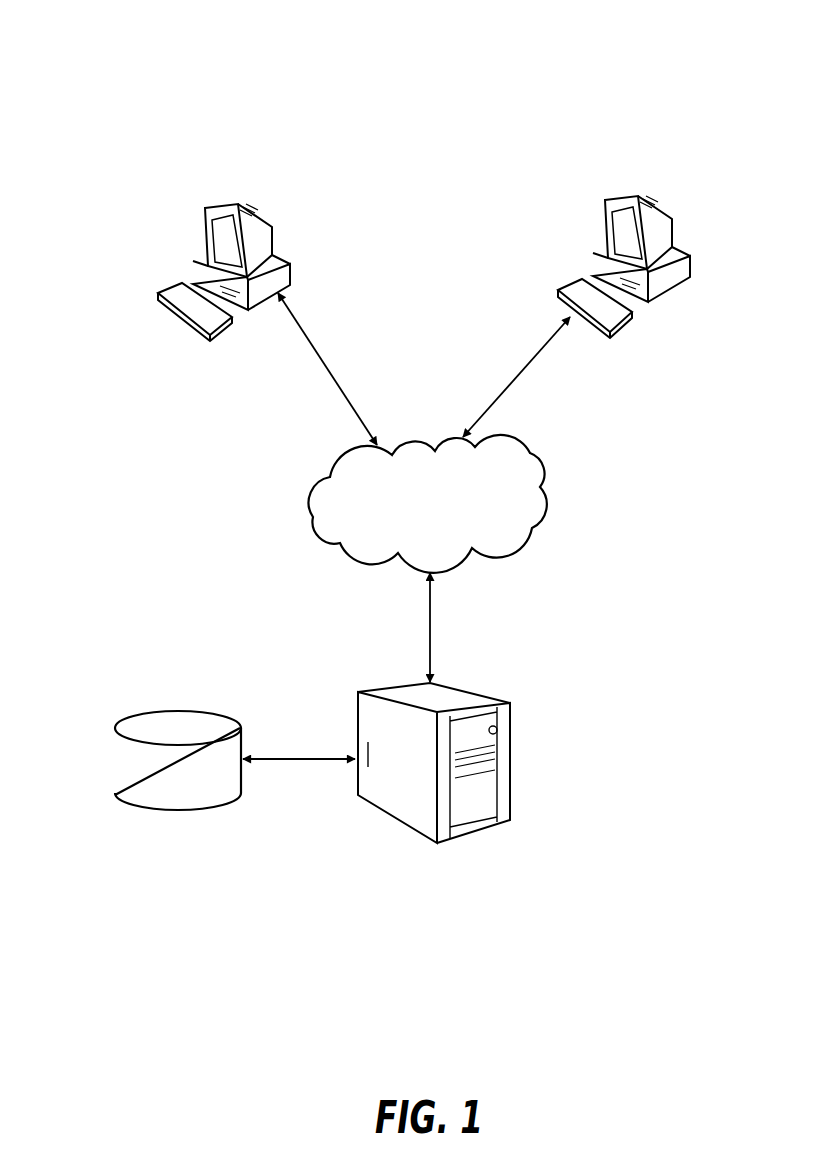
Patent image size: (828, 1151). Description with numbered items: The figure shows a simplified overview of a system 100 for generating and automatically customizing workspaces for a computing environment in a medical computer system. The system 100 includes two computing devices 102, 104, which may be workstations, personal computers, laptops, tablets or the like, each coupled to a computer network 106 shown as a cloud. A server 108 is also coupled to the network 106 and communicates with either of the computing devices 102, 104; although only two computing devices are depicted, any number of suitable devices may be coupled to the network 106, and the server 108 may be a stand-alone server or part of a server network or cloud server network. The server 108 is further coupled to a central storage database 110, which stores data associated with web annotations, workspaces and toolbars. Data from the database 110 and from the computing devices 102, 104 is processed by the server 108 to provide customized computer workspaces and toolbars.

The system 100 is at (460, 98).
The computing device 102 is at (205, 207).
The computing device 104 is at (605, 200).
The computer network 106 is at (458, 521).
The server 108 is at (450, 845).
The central storage database 110 is at (113, 728).